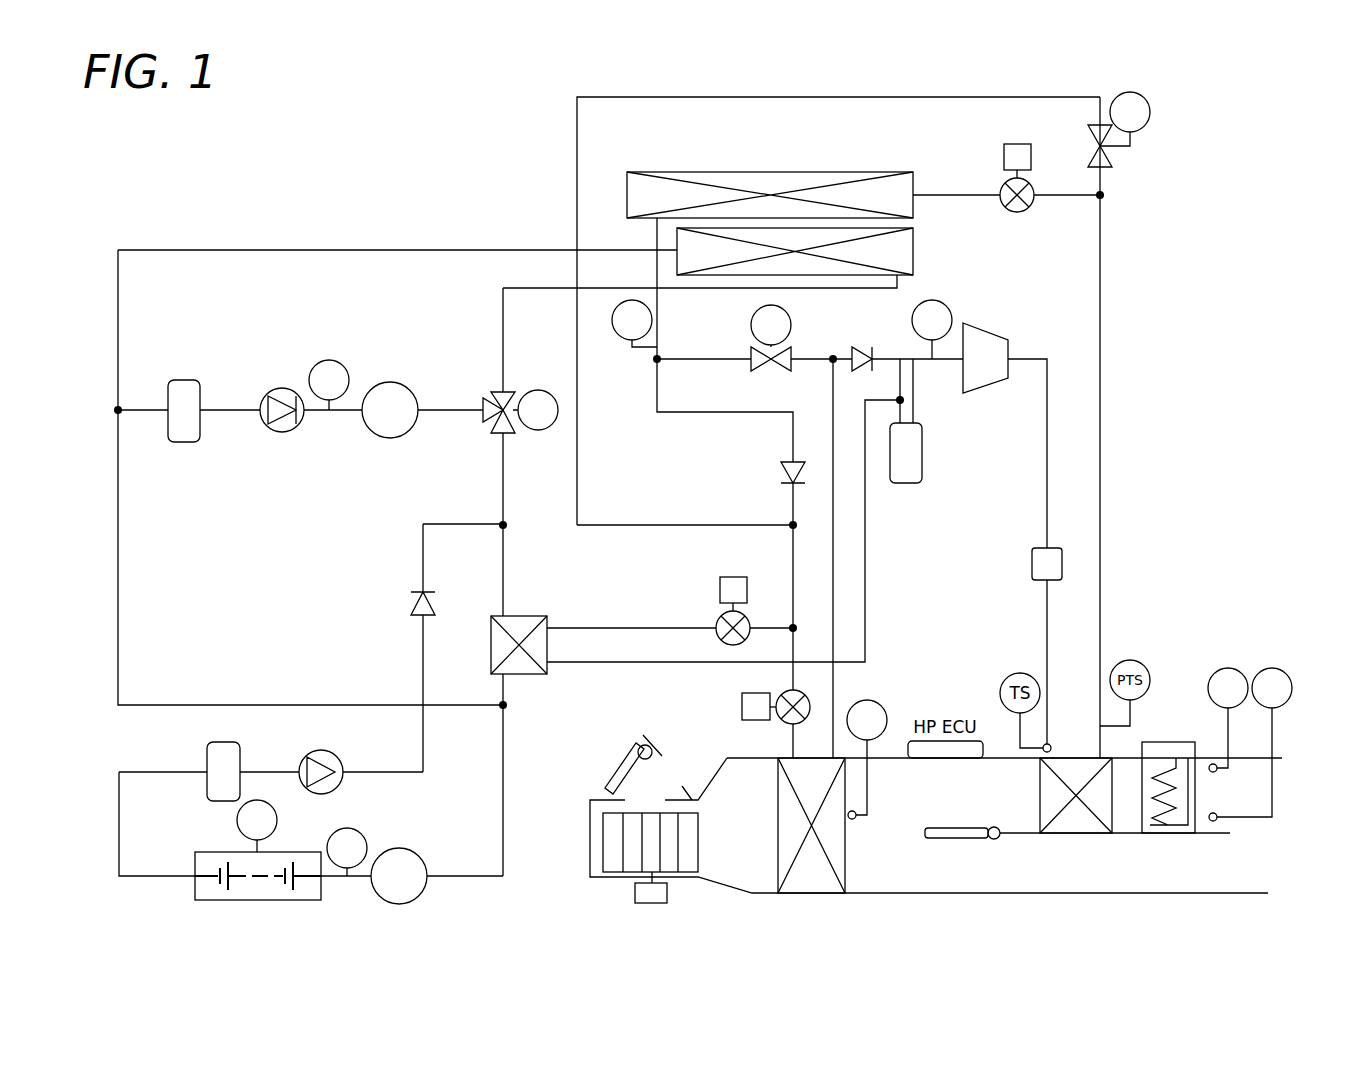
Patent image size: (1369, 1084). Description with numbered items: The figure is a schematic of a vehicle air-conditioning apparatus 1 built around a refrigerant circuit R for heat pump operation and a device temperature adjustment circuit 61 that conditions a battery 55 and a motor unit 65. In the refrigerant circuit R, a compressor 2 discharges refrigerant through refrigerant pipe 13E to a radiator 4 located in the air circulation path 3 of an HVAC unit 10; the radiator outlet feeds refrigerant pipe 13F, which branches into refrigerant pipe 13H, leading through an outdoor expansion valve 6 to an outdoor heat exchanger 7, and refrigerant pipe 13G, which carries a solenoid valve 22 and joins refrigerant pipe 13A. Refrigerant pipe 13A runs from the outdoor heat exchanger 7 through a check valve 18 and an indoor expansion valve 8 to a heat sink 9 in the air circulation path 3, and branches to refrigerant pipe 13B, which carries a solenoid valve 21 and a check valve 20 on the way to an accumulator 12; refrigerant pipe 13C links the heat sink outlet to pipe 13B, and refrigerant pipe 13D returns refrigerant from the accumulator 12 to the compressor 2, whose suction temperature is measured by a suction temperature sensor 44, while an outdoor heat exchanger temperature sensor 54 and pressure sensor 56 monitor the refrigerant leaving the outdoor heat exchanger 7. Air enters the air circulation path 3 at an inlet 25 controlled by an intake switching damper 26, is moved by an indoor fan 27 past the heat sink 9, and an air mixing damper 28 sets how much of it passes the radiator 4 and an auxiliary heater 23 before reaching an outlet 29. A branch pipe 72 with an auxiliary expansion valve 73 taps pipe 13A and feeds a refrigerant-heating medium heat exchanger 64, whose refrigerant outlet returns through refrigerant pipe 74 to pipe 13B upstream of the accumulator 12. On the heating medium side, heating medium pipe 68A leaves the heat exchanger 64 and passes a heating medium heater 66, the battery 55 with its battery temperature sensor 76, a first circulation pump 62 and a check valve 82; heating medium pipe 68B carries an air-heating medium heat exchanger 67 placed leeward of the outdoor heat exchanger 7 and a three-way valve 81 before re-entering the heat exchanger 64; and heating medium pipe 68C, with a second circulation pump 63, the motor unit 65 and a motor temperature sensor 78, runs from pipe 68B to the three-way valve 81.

The vehicle air-conditioning apparatus 1 is at (1252, 104).
The compressor 2 is at (990, 334).
The air circulation path 3 is at (882, 893).
The radiator 4 is at (1040, 798).
The outdoor expansion valve 6 is at (1000, 188).
The outdoor heat exchanger 7 is at (882, 172).
The indoor expansion valve 8 is at (779, 716).
The heat sink 9 is at (815, 893).
The HVAC unit 10 is at (1042, 897).
The accumulator 12 is at (922, 464).
The refrigerant pipe 13A is at (657, 411).
The refrigerant pipe 13B is at (724, 359).
The refrigerant pipe 13C is at (833, 401).
The refrigerant pipe 13D is at (913, 412).
The refrigerant pipe 13E is at (1047, 483).
The refrigerant pipe 13F is at (1102, 356).
The refrigerant pipe 13G is at (922, 97).
The refrigerant pipe 13H is at (1046, 195).
The check valve 18 is at (781, 476).
The check valve 20 is at (861, 348).
The solenoid valve 21 is at (800, 356).
The solenoid valve 22 is at (1112, 152).
The auxiliary heater 23 is at (1179, 820).
The inlet 25 is at (676, 768).
The intake switching damper 26 is at (618, 766).
The indoor fan 27 is at (670, 868).
The air mixing damper 28 is at (935, 842).
The outlet 29 is at (1276, 796).
The suction temperature sensor 44 is at (948, 310).
The outdoor heat exchanger temperature sensor 54 is at (614, 345).
The outdoor heat exchanger pressure sensor 56 is at (626, 338).
The battery 55 is at (257, 900).
The device temperature adjustment circuit 61 is at (230, 224).
The first circulation pump 62 is at (343, 760).
The second circulation pump 63 is at (277, 388).
The refrigerant-heating medium heat exchanger 64 is at (531, 616).
The motor unit 65 is at (393, 382).
The heating medium heater 66 is at (399, 904).
The air-heating medium heat exchanger 67 is at (913, 252).
The heating medium pipe 68A is at (475, 876).
The heating medium pipe 68B is at (118, 520).
The heating medium pipe 68C is at (226, 410).
The branch pipe 72 is at (575, 628).
The auxiliary expansion valve 73 is at (717, 620).
The refrigerant pipe 74 is at (578, 662).
The battery temperature sensor 76 is at (278, 816).
The motor temperature sensor 78 is at (329, 360).
The three-way valve 81 is at (515, 392).
The check valve 82 is at (418, 615).
The refrigerant circuit R is at (1212, 380).